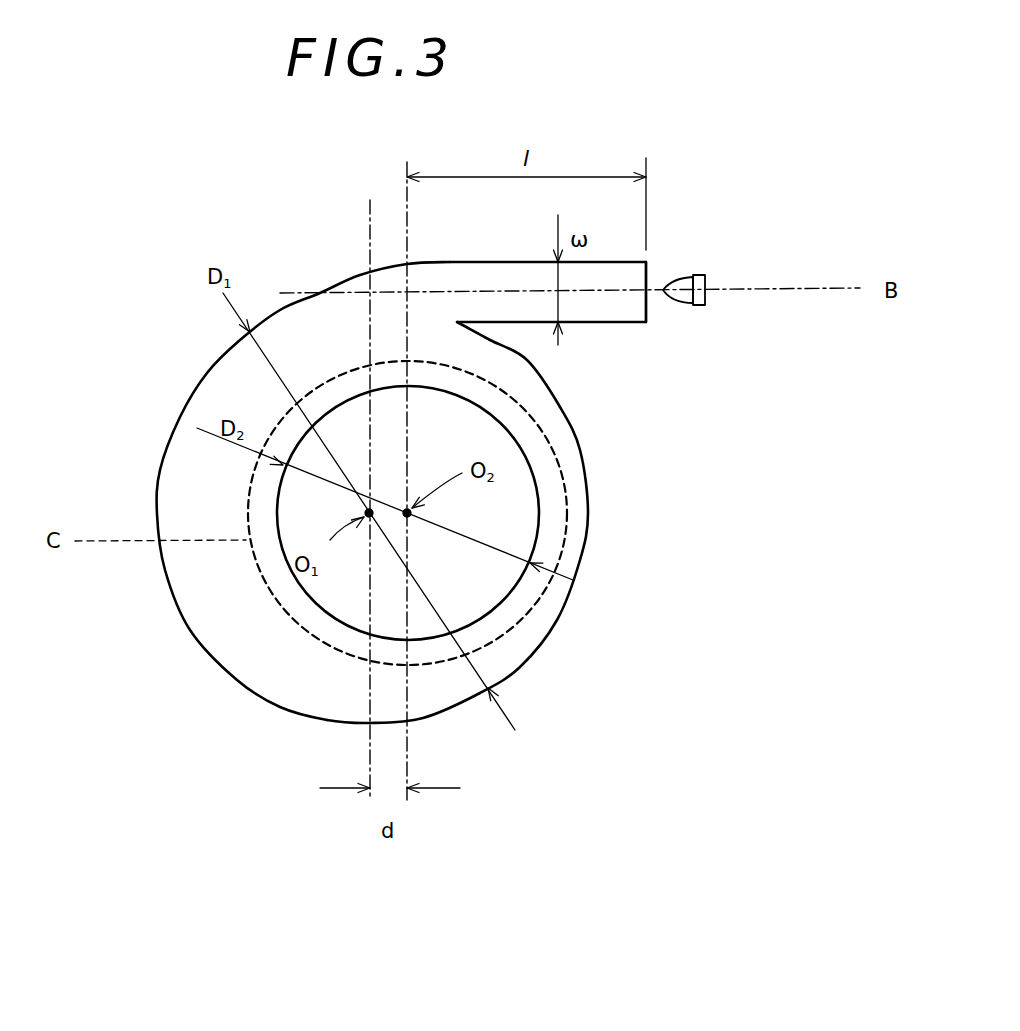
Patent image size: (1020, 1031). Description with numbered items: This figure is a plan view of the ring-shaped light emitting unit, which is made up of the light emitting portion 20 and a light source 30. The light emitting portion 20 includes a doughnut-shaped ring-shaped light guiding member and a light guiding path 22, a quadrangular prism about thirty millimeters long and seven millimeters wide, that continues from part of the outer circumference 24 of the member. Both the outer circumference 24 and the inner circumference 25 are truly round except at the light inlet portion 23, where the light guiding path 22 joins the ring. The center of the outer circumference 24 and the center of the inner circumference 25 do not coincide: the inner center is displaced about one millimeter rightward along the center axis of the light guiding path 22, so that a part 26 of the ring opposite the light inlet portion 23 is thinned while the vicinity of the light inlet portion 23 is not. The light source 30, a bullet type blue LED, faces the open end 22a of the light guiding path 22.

The light emitting portion 20 is at (512, 648).
The light guiding path 22 is at (600, 313).
The open end 22a is at (647, 273).
The light inlet portion 23 is at (408, 222).
The outer circumference 24 is at (238, 680).
The inner circumference 25 is at (537, 500).
The thinned part 26 is at (542, 366).
The light source 30 is at (684, 305).